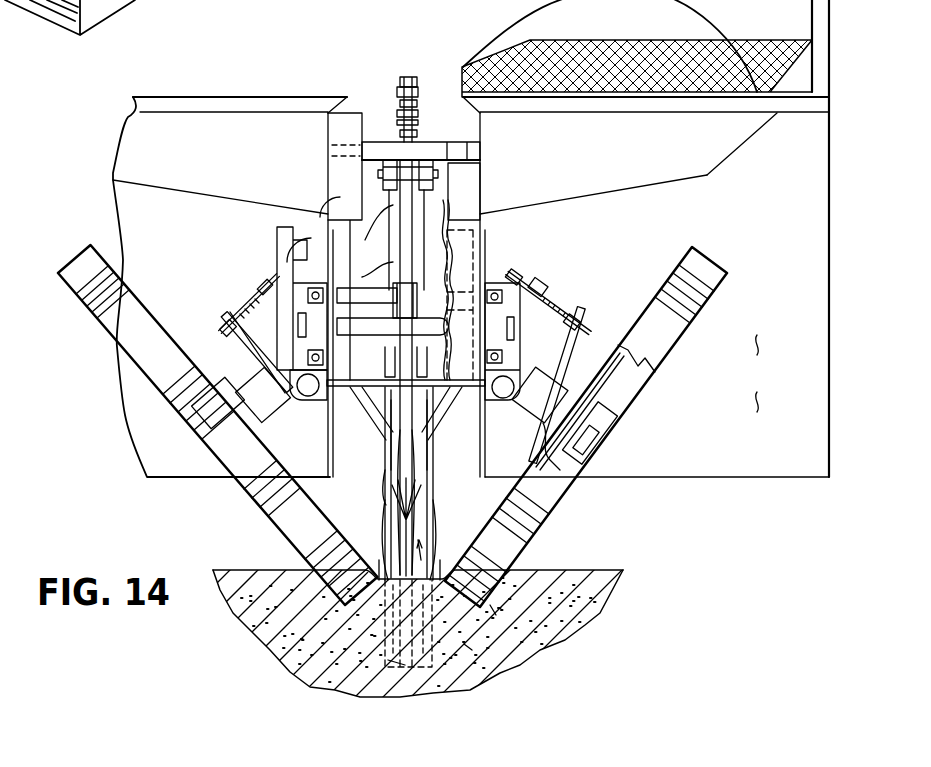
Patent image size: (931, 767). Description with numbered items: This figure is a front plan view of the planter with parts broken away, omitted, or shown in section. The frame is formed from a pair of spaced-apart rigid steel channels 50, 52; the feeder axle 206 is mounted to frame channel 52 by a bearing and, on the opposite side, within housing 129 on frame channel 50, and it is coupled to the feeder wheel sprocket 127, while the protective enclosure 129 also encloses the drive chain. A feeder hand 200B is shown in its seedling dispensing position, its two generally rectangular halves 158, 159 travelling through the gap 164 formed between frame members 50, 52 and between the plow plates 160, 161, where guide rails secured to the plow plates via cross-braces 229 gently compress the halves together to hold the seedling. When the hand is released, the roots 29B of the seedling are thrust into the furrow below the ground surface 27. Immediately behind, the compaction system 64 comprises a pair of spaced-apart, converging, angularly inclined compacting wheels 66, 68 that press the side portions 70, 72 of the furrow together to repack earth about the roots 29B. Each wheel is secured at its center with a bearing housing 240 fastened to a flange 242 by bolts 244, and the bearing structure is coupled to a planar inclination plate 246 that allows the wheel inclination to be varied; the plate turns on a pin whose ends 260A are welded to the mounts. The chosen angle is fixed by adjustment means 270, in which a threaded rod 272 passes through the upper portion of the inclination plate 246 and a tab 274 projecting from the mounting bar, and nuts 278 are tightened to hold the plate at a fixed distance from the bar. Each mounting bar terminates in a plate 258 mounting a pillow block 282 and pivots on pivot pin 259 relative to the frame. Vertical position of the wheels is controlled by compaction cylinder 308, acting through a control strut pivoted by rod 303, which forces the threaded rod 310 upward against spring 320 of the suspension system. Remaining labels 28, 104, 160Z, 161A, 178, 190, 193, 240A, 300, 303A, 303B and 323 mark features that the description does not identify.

The ground surface 27 is at (600, 570).
The soil 28 is at (567, 620).
The roots 29B is at (382, 628).
The frame channel 50 is at (310, 197).
The frame channel 52 is at (470, 203).
The compaction system 64 is at (493, 608).
The compacting wheel 66 is at (265, 517).
The compacting wheel 68 is at (532, 526).
The side portion of furrow 70 is at (447, 580).
The side portion of furrow 72 is at (377, 580).
The seed outlet 104 is at (400, 667).
The feeder wheel sprocket 127 is at (277, 250).
The housing 129 is at (277, 227).
The hand half 158 is at (396, 463).
The hand half 159 is at (427, 470).
The plow plate 160 is at (387, 532).
The tine axis Z 160Z is at (757, 373).
The plow plate 161 is at (434, 512).
The tine blade edge 161A is at (350, 487).
The gap 164 is at (420, 563).
The hopper 178 is at (710, 18).
The frame body 190 is at (147, 150).
The cross-hatched pad 193 is at (480, 62).
The hand 200B is at (418, 440).
The axle 206 is at (328, 183).
The cross-brace 229 is at (365, 352).
The bearing housing 240 is at (600, 405).
The mounting plate bracket 240A is at (600, 440).
The flange 242 is at (605, 348).
The bolts 244 is at (560, 470).
The inclination plate 246 is at (240, 337).
The plate 258 is at (200, 0).
The pivot pin 259 is at (287, 373).
The pin ends 260A is at (503, 398).
The adjustment means 270 is at (246, 300).
The threaded rod 272 is at (550, 300).
The tab 274 is at (548, 286).
The nuts 278 is at (560, 305).
The pillow block 282 is at (298, 303).
The shaft 300 is at (437, 216).
The rod 303 is at (312, 132).
The housing slot 303A is at (328, 155).
The top plate 303B is at (468, 143).
The compaction cylinder 308 is at (450, 248).
The threaded rod 310 is at (407, 77).
The spring 320 is at (400, 106).
The lock nut 323 is at (397, 92).